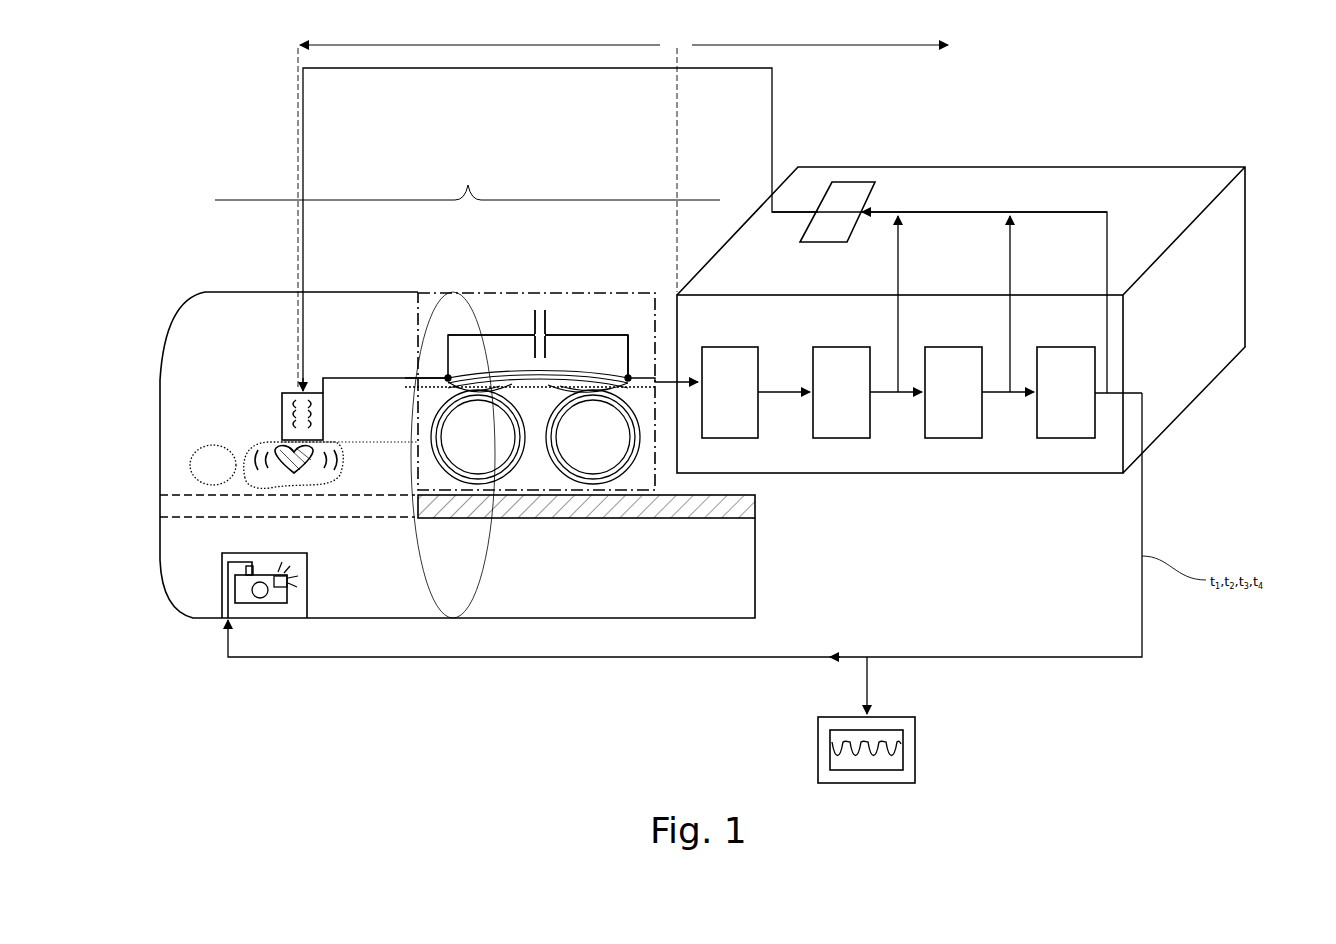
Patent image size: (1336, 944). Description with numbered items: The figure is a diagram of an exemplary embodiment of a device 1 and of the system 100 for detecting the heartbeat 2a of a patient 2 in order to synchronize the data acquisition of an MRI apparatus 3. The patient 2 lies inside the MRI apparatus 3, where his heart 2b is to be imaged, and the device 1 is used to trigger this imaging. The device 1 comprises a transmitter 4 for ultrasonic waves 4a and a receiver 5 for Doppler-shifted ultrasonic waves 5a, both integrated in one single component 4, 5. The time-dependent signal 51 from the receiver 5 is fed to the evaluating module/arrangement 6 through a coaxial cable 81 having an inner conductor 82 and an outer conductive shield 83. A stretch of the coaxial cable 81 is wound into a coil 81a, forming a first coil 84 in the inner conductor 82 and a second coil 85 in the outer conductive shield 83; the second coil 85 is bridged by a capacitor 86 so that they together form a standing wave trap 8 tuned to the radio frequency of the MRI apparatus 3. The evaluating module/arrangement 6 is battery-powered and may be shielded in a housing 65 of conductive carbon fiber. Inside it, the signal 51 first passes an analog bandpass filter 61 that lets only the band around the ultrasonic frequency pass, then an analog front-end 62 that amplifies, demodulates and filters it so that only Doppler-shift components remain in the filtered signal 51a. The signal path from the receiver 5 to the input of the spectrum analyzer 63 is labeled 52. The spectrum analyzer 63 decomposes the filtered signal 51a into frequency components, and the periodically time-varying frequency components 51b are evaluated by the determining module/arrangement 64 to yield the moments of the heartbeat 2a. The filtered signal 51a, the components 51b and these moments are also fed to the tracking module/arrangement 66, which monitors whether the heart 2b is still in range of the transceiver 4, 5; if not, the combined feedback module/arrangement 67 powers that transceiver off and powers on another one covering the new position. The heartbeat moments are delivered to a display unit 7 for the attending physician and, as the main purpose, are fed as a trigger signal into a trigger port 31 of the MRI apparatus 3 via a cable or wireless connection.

The device 1 is at (467, 178).
The patient 2 is at (205, 436).
The heartbeat 2a is at (340, 455).
The heart 2b is at (296, 474).
The MRI apparatus 3 is at (365, 292).
The transmitter 4 is at (331, 390).
The receiver 5 is at (331, 386).
The ultrasonic waves 4a is at (290, 400).
The Doppler-shifted ultrasonic waves 5a is at (323, 415).
The evaluating module/arrangement 6 is at (738, 292).
The display unit 7 is at (918, 746).
The standing wave trap 8 is at (486, 292).
The trigger port 31 is at (310, 566).
The time-dependent signal 51 is at (405, 378).
The filtered signal 51a is at (895, 396).
The frequency components 51b is at (1000, 396).
The signal path 52 is at (623, 213).
The analog bandpass filter 61 is at (738, 346).
The analog front-end 62 is at (843, 346).
The spectrum analyzer 63 is at (945, 346).
The determining module/arrangement 64 is at (1067, 346).
The housing 65 is at (1065, 165).
The tracking module/arrangement 66 is at (939, 179).
The feedback module/arrangement 67 is at (860, 180).
The coaxial cable 81 is at (567, 471).
The coil 81a is at (510, 295).
The inner conductor 82 is at (640, 293).
The outer conductive shield 83 is at (615, 372).
The first coil 84 is at (592, 490).
The second coil 85 is at (546, 450).
The capacitor 86 is at (540, 308).
The system 100 is at (218, 683).